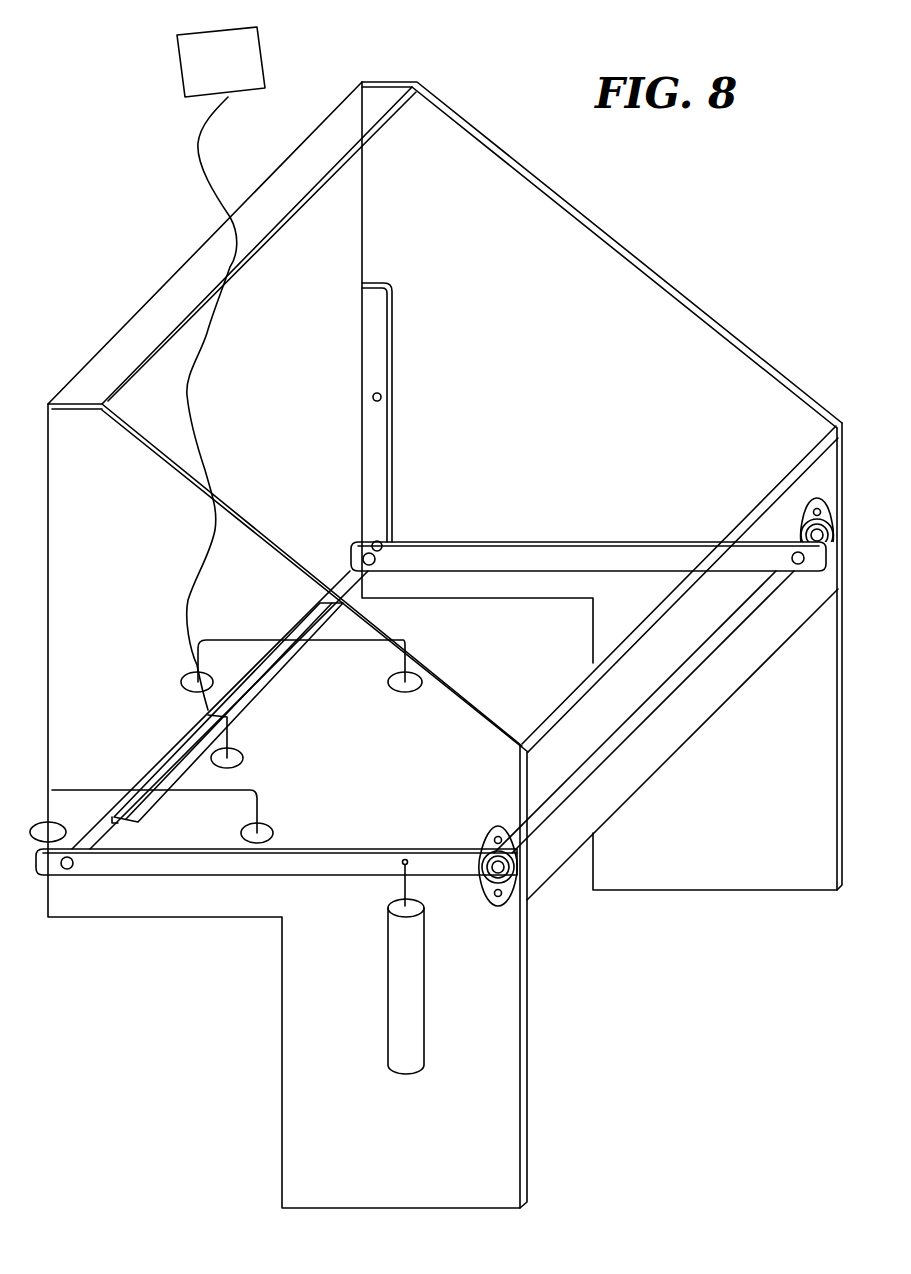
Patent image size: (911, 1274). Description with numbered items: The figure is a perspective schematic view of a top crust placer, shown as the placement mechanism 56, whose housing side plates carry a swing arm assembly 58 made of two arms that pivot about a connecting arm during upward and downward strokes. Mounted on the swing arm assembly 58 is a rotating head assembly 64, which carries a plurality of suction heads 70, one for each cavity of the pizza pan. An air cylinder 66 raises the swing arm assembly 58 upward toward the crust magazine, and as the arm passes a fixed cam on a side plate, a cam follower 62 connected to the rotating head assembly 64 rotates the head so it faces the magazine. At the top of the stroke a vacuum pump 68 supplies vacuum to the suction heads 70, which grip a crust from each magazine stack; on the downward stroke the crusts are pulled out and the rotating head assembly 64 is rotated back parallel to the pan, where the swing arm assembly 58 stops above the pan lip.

The placement mechanism 56 is at (707, 288).
The swing arm assembly 58 is at (588, 556).
The cam follower 62 is at (380, 325).
The rotating head assembly 64 is at (272, 672).
The air cylinder 66 is at (415, 983).
The vacuum pump 68 is at (245, 68).
The suction heads 70 is at (182, 676).